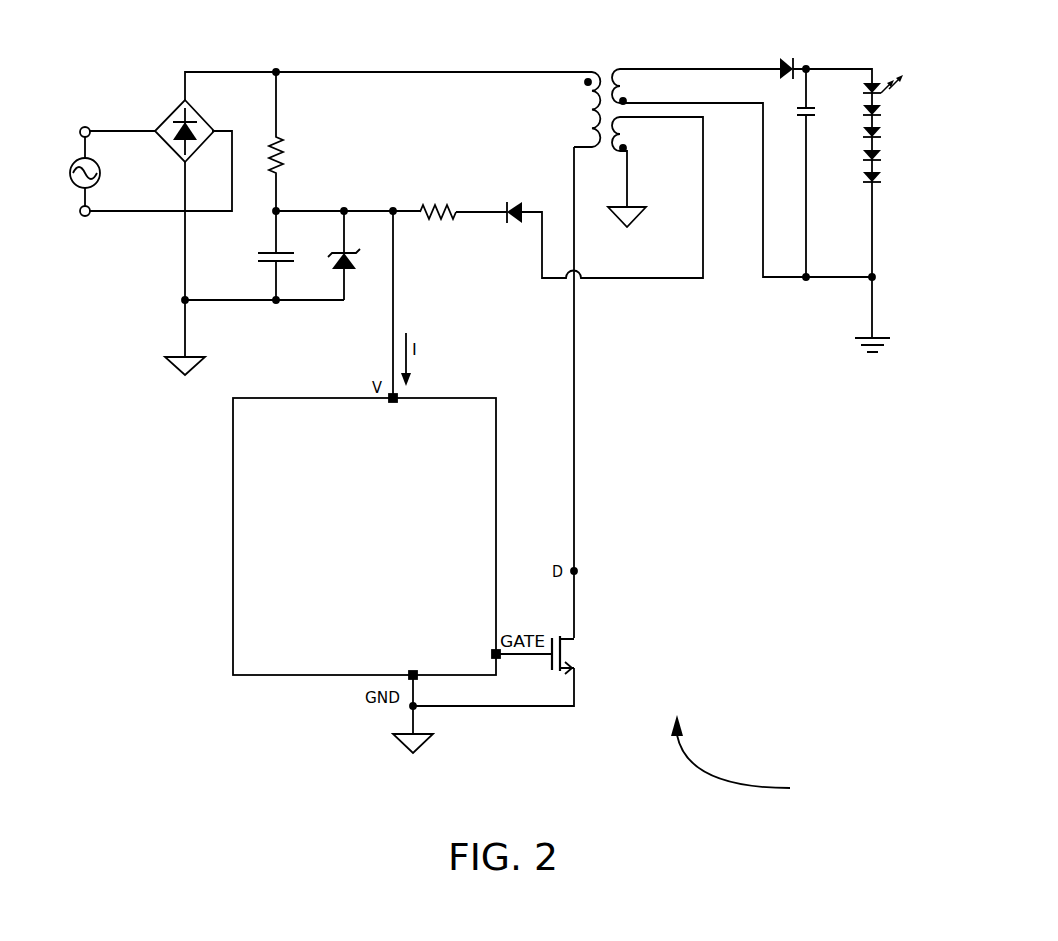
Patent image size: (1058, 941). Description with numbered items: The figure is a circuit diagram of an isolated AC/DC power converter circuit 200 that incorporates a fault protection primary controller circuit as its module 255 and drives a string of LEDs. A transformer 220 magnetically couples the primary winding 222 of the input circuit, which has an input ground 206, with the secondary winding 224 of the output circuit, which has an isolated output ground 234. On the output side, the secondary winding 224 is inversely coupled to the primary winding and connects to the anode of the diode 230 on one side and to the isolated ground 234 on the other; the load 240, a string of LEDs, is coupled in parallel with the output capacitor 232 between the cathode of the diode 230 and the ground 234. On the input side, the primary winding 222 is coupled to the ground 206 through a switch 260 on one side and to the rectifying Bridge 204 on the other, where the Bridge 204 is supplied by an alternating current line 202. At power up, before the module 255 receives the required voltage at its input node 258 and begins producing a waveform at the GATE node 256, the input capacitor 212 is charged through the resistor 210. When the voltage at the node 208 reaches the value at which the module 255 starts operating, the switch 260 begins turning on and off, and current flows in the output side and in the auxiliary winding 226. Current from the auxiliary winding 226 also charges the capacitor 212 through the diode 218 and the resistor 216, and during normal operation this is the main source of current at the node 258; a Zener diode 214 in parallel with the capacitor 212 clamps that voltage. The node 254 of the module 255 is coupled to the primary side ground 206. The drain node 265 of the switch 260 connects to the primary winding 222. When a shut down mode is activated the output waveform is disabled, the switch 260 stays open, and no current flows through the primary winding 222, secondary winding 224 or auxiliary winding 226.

The isolated AC/DC power converter circuit 200 is at (843, 801).
The alternating current (AC) line 202 is at (131, 161).
The rectifying Bridge 204 is at (236, 115).
The input ground 206 is at (226, 345).
The node 208 is at (313, 205).
The resistor 210 is at (313, 123).
The input capacitor 212 is at (311, 287).
The Zener diode 214 is at (378, 293).
The resistor 216 is at (448, 241).
The diode 218 is at (531, 246).
The transformer 220 is at (693, 59).
The primary winding 222 is at (585, 111).
The secondary winding 224 is at (656, 91).
The auxiliary winding 226 is at (656, 136).
The diode 230 is at (848, 59).
The output capacitor 232 is at (840, 136).
The isolated output ground 234 is at (913, 330).
The load 240 is at (916, 129).
The node 254 is at (406, 666).
The module 255 is at (386, 543).
The GATE node 256 is at (488, 643).
The input node 258 is at (413, 428).
The switch 260 is at (613, 665).
The drain node 265 is at (616, 578).